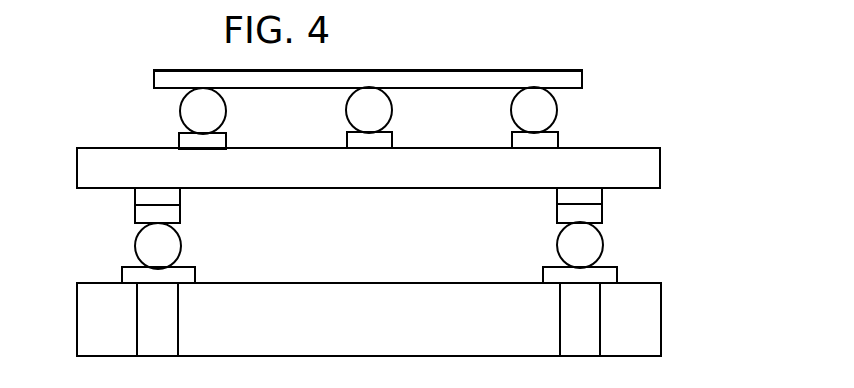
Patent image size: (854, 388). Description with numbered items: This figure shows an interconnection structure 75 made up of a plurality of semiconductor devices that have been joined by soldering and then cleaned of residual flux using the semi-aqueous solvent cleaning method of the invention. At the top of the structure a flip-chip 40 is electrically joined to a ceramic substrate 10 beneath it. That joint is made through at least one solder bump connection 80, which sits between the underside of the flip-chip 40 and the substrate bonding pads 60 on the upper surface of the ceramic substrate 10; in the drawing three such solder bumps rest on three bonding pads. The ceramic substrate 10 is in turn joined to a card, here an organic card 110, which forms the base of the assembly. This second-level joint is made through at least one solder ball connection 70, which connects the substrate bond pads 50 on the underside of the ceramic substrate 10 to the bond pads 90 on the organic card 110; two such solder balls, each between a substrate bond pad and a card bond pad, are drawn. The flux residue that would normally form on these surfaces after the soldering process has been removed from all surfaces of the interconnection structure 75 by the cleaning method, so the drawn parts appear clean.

The interconnection structure 75 is at (665, 61).
The flip-chip 40 is at (543, 73).
The solder bump connection 80 is at (547, 107).
The substrate bonding pads 60 is at (207, 143).
The ceramic substrate 10 is at (648, 165).
The substrate bond pads 50 is at (175, 193).
The solder ball connection 70 is at (593, 238).
The bond pads 90 is at (550, 272).
The organic card 110 is at (645, 317).